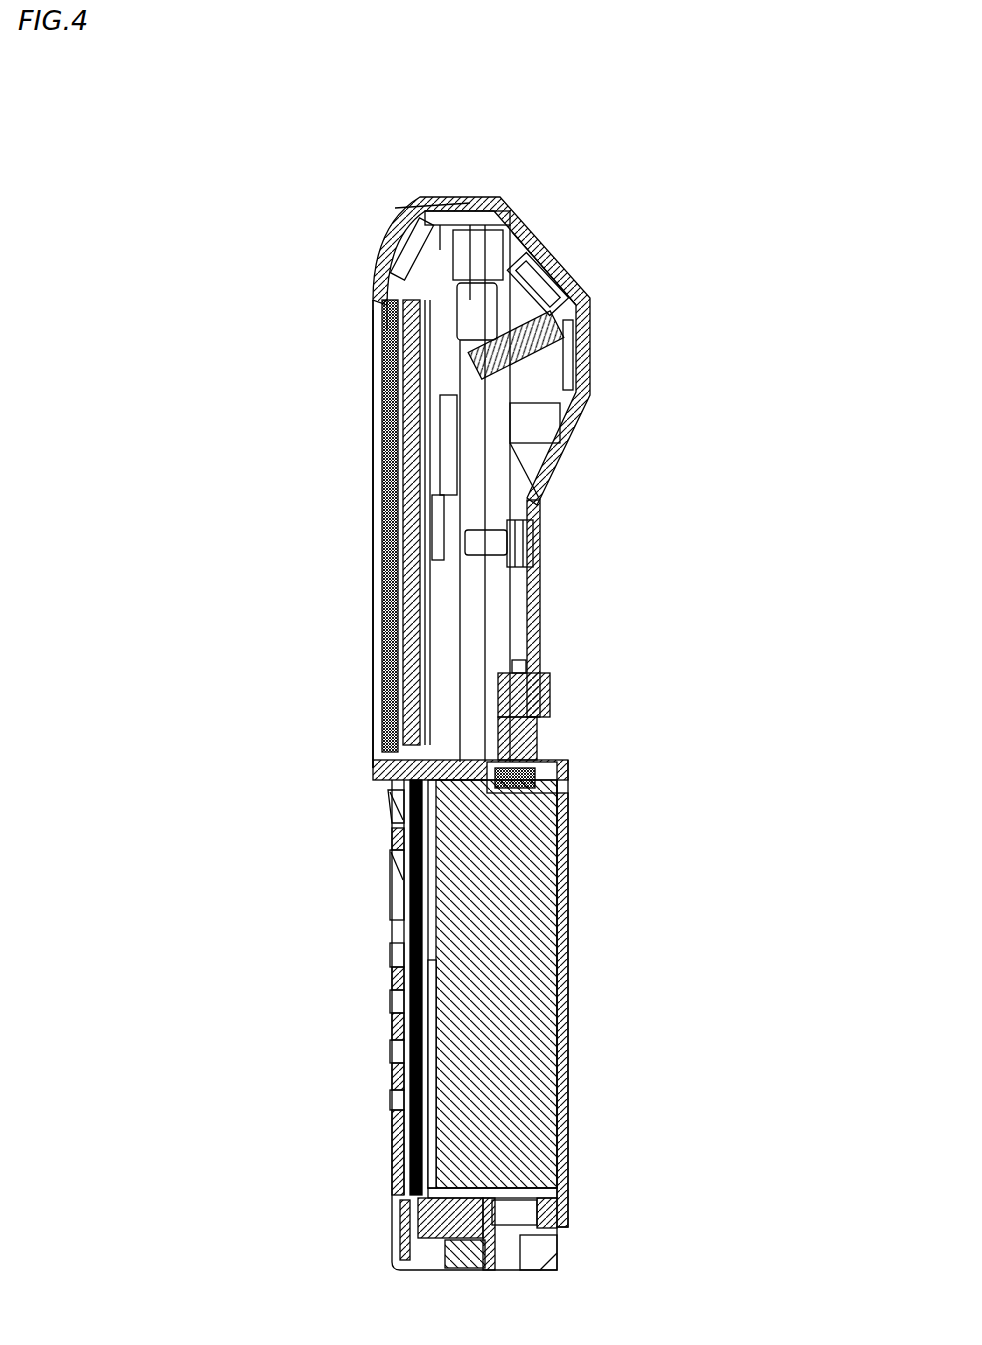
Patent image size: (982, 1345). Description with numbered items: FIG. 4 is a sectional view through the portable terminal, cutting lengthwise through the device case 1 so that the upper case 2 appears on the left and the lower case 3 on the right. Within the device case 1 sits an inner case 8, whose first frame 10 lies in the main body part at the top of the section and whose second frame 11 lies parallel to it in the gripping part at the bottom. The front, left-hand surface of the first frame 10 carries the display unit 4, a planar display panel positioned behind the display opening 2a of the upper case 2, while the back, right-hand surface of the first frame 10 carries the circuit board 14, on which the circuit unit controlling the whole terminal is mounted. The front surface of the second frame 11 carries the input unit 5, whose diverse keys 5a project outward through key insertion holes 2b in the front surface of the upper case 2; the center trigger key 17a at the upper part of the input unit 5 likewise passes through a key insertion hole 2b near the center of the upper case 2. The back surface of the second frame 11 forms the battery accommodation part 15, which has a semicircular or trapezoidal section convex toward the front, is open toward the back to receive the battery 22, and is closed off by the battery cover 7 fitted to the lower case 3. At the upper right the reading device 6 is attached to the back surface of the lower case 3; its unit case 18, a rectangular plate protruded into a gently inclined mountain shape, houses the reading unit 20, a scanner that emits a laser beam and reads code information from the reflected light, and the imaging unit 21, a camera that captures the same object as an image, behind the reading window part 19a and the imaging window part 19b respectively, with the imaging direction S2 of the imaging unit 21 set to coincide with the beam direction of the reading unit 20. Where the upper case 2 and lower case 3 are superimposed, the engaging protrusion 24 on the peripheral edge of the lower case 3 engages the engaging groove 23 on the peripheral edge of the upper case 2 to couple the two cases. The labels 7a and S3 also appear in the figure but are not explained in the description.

The device case 1 is at (492, 193).
The upper case 2 is at (390, 253).
The display opening 2a is at (373, 528).
The key insertion holes 2b is at (383, 832).
The lower case 3 is at (533, 610).
The display unit 4 is at (371, 602).
The input unit 5 is at (390, 1008).
The diverse keys 5a is at (390, 907).
The reading device 6 is at (602, 361).
The battery cover 7 is at (565, 960).
The battery terminal 7a is at (547, 687).
The inner case 8 is at (397, 865).
The first frame 10 is at (377, 290).
The second frame 11 is at (397, 1123).
The circuit board 14 is at (400, 445).
The battery accommodation part 15 is at (560, 773).
The center trigger key 17a is at (377, 813).
The unit case 18 is at (570, 433).
The reading window part 19a is at (580, 340).
The imaging window part 19b is at (565, 260).
The reading unit 20 is at (588, 380).
The imaging unit 21 is at (580, 273).
The battery 22 is at (533, 1055).
The engaging groove 23 is at (417, 218).
The engaging protrusion 24 is at (403, 207).
The imaging direction S2 is at (585, 262).
The light path direction S3 is at (607, 322).